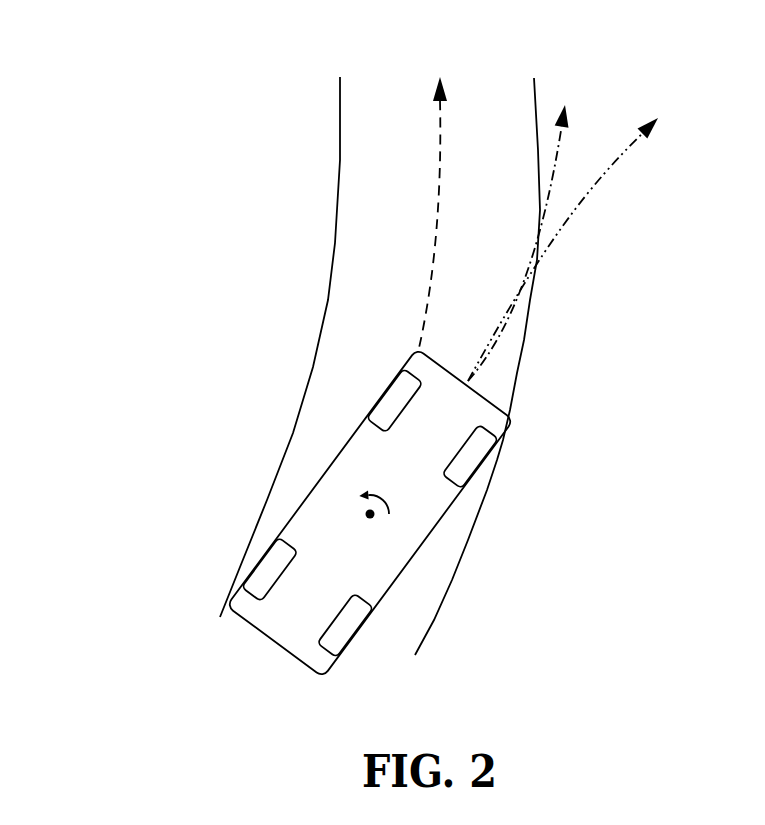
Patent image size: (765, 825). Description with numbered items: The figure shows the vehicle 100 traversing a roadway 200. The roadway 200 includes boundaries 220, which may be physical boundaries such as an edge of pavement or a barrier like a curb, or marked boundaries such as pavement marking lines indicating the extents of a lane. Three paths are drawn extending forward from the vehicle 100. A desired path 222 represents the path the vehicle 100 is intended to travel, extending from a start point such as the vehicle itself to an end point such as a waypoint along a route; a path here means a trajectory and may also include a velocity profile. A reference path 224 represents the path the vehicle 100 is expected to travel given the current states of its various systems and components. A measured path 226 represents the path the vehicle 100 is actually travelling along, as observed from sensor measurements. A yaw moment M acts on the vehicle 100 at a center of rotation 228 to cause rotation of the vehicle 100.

The roadway 200 is at (90, 48).
The vehicle 100 is at (283, 648).
The boundaries 220 is at (335, 243).
The desired path 222 is at (442, 153).
The reference path 224 is at (518, 293).
The measured path 226 is at (577, 205).
The center of rotation 228 is at (365, 513).